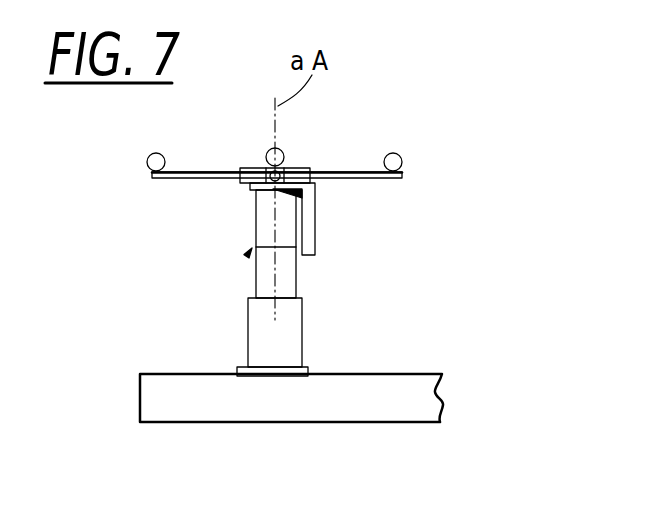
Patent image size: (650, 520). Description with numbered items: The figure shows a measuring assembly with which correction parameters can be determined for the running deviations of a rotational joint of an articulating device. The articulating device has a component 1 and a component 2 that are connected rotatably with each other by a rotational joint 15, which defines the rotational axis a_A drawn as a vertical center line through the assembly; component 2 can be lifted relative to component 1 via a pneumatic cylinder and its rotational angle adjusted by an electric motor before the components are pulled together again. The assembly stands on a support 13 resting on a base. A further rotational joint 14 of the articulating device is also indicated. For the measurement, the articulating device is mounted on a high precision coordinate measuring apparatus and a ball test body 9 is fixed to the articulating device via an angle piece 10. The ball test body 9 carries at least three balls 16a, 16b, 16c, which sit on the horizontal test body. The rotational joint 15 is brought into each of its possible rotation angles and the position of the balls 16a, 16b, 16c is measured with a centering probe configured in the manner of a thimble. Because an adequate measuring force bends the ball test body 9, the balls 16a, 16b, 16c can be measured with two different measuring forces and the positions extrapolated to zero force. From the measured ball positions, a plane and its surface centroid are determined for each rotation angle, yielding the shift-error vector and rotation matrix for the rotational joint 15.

The component 1 is at (288, 277).
The component 2 is at (268, 232).
The ball test body 9 is at (198, 176).
The angle piece 10 is at (308, 238).
The cylinder base 13 is at (292, 345).
The rotational joint 14 is at (275, 193).
The rotational joint 15 is at (250, 251).
The ball 16a is at (163, 156).
The ball 16b is at (282, 153).
The ball 16c is at (399, 156).